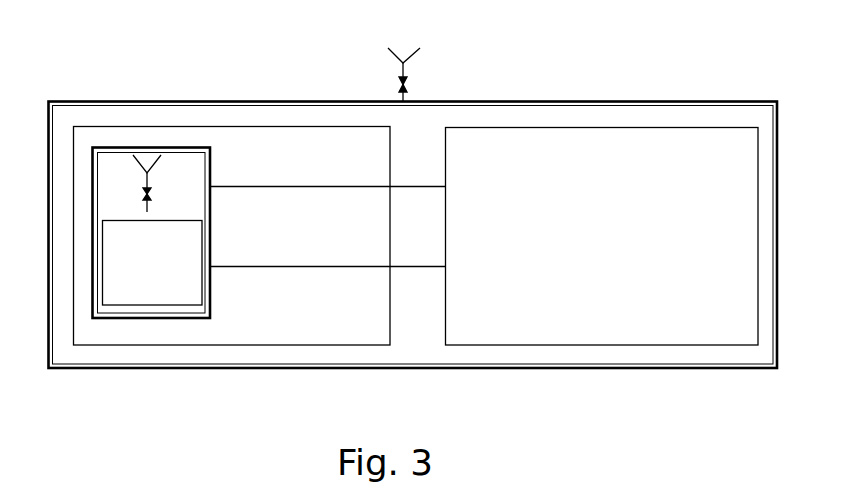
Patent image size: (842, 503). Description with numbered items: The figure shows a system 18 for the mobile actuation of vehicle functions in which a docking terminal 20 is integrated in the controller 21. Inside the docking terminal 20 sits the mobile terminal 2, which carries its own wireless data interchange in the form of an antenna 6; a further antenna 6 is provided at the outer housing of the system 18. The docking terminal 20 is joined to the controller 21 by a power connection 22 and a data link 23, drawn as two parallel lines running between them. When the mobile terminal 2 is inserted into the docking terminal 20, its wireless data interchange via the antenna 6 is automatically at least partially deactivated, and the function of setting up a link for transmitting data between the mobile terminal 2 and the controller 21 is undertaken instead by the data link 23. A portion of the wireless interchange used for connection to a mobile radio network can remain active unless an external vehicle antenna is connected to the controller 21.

The mobile terminal 2 is at (162, 318).
The antenna 6 is at (432, 63).
The system 18 is at (452, 393).
The docking terminal 20 is at (260, 345).
The controller 21 is at (550, 372).
The power connection 22 is at (295, 192).
The data link 23 is at (298, 267).